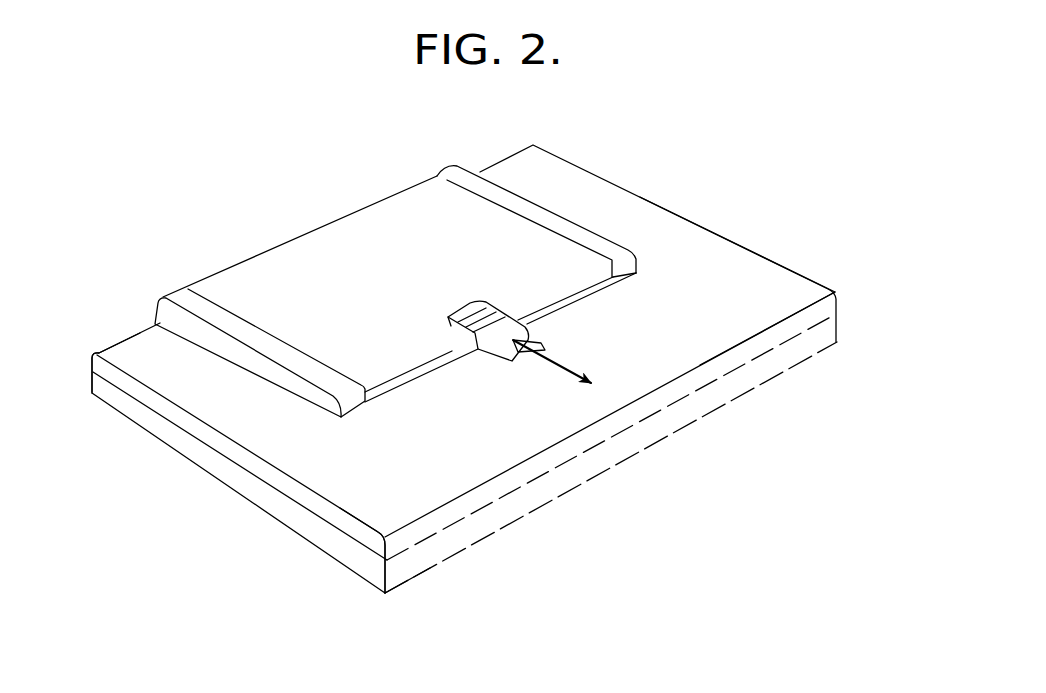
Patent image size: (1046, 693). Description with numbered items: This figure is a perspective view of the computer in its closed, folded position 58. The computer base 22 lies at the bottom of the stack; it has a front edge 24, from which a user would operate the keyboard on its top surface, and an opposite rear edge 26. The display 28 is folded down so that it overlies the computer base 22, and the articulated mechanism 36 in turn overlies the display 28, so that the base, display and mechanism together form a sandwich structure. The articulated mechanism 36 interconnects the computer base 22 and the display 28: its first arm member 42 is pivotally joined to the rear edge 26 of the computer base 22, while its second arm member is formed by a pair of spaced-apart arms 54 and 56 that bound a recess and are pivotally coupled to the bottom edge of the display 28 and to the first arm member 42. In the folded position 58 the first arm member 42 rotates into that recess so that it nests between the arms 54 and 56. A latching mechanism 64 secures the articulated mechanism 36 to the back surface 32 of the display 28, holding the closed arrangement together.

The computer base 22 is at (817, 341).
The front edge 24 is at (733, 390).
The rear edge 26 is at (121, 338).
The display 28 is at (369, 537).
The back surface 32 is at (739, 269).
The articulated mechanism 36 is at (369, 170).
The first arm member 42 is at (323, 256).
The arm 54 is at (567, 227).
The arm 56 is at (284, 372).
The folded position 58 is at (409, 276).
The latching mechanism 64 is at (494, 341).